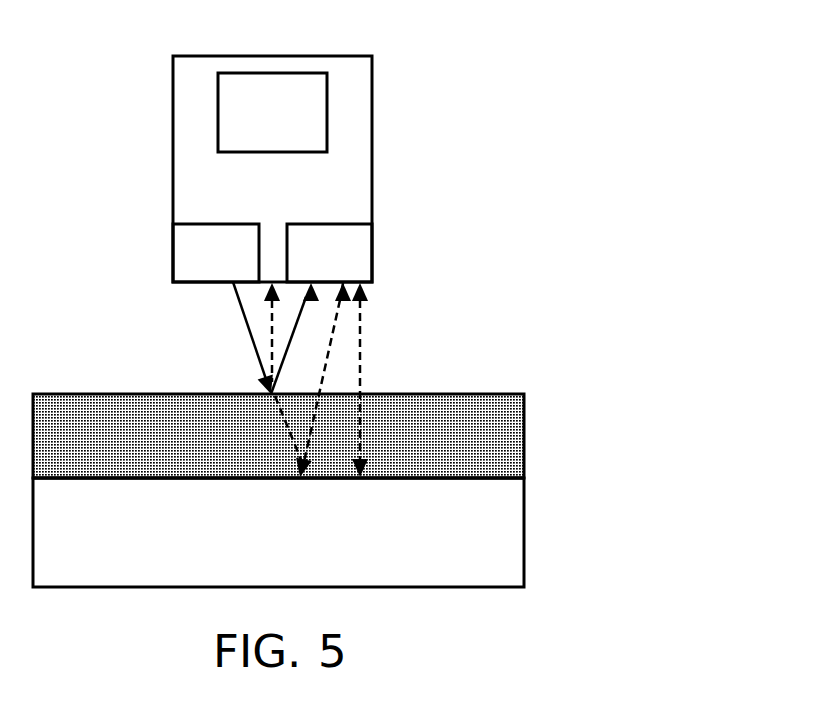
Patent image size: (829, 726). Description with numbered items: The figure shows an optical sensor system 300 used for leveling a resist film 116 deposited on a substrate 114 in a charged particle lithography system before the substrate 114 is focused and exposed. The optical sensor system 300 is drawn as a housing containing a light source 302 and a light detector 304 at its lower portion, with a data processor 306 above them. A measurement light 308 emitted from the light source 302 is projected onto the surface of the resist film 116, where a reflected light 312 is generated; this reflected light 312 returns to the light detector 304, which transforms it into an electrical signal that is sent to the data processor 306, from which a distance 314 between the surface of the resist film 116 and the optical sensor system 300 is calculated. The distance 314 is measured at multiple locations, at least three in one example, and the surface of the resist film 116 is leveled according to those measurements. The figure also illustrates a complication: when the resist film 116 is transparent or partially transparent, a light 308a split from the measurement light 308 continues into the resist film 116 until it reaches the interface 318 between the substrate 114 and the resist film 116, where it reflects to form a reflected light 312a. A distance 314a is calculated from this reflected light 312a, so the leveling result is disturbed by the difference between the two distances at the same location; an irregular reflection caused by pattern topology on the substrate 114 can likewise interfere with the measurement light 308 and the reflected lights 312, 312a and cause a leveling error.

The optical sensor system 300 is at (500, 95).
The light source 302 is at (173, 253).
The light detector 304 is at (372, 253).
The data processor 306 is at (327, 112).
The measurement light 308 is at (252, 337).
The split light 308a is at (278, 414).
The reflected light 312 is at (288, 349).
The reflected light from interface 312a is at (336, 310).
The distance 314 is at (270, 305).
The distance from interface 314a is at (360, 367).
The resist film 116 is at (524, 433).
The interface 318 is at (524, 478).
The substrate 114 is at (524, 530).